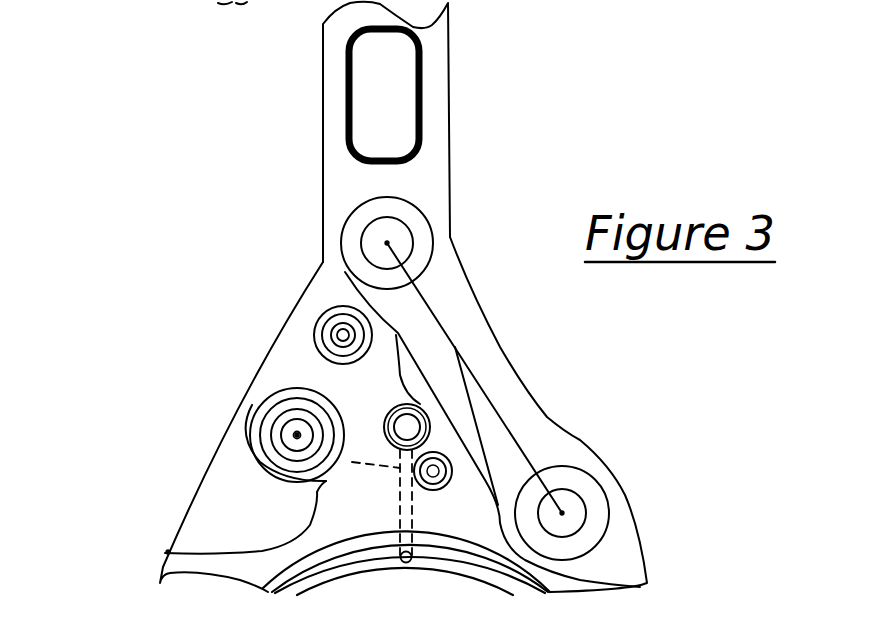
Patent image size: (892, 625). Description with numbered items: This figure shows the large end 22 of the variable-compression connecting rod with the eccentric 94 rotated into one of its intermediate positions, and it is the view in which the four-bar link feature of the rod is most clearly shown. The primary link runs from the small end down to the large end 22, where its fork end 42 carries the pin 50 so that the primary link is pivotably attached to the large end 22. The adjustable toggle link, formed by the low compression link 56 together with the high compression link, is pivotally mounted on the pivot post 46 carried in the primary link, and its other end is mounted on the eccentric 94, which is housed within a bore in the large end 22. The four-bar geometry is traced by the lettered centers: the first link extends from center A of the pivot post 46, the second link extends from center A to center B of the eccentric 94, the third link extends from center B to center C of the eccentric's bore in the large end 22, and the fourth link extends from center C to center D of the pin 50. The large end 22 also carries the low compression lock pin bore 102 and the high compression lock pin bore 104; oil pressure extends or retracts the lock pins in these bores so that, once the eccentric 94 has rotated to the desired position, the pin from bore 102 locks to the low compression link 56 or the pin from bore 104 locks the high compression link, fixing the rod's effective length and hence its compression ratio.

The large end 22 is at (200, 515).
The fork end of primary link 42 is at (550, 442).
The pivot post 46 is at (340, 236).
The pin 50 is at (625, 517).
The low compression link 56 is at (271, 370).
The eccentric 94 is at (257, 457).
The low compression lock pin bore 102 is at (421, 405).
The high compression lock pin bore 104 is at (435, 452).
The center of pin 46 A is at (360, 243).
The center of eccentric 94 B is at (245, 410).
The center of bore 96 C is at (168, 552).
The center of pin 50 D is at (510, 503).